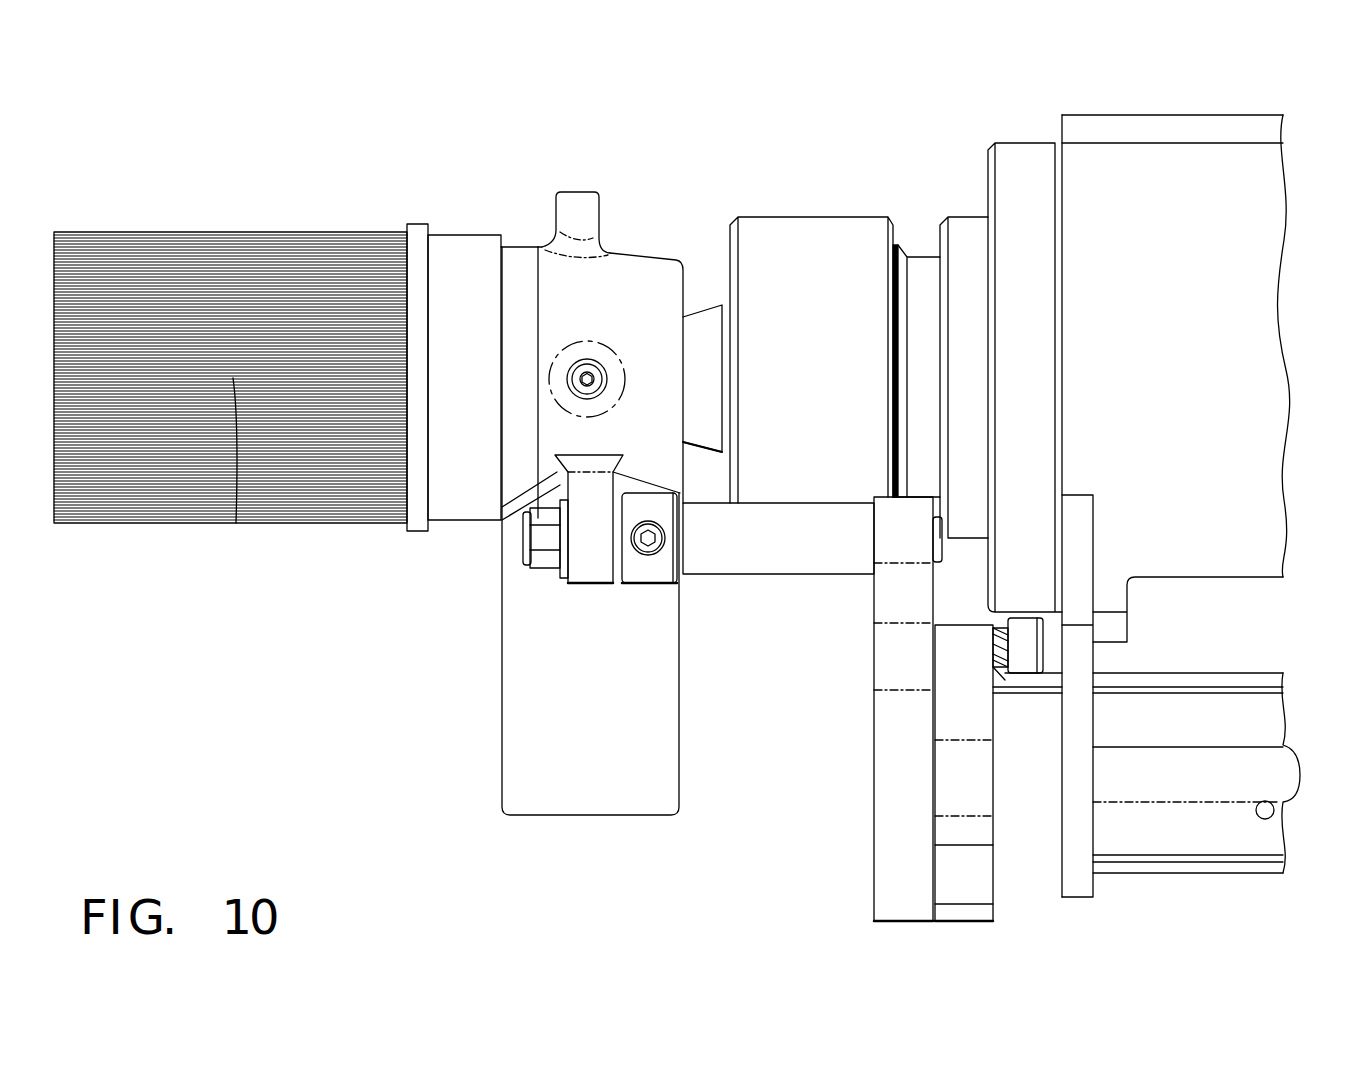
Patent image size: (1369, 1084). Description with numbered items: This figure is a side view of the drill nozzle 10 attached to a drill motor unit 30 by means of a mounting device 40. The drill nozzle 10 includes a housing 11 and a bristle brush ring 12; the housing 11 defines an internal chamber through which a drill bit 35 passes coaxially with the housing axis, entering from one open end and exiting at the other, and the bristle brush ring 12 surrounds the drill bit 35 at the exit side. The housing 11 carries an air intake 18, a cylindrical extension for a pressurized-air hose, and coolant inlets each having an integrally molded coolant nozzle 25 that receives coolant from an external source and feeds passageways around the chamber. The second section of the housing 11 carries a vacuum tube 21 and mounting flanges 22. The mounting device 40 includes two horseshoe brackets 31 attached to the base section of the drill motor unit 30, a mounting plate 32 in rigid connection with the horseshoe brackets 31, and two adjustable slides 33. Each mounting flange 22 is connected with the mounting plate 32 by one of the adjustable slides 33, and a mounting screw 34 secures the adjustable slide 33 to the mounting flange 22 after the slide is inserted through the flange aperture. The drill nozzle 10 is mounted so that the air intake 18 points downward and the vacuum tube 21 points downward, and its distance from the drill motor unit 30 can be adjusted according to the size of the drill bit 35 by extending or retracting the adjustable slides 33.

The drill nozzle 10 is at (468, 138).
The housing 11 is at (663, 258).
The bristle brush ring 12 is at (255, 225).
The air intake 18 is at (578, 205).
The vacuum tube 21 is at (590, 785).
The mounting flange 22 is at (590, 565).
The coolant nozzle 25 is at (600, 382).
The drill motor unit 30 is at (1276, 90).
The horseshoe bracket 31 is at (1075, 890).
The mounting plate 32 is at (903, 905).
The adjustable slide 33 is at (745, 559).
The mounting screw 34 is at (545, 548).
The drill bit 35 is at (236, 522).
The mounting device 40 is at (805, 845).